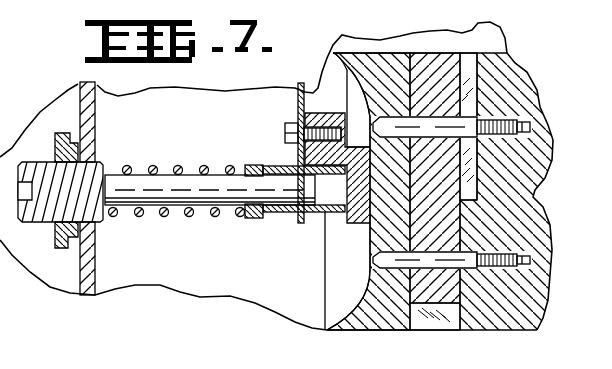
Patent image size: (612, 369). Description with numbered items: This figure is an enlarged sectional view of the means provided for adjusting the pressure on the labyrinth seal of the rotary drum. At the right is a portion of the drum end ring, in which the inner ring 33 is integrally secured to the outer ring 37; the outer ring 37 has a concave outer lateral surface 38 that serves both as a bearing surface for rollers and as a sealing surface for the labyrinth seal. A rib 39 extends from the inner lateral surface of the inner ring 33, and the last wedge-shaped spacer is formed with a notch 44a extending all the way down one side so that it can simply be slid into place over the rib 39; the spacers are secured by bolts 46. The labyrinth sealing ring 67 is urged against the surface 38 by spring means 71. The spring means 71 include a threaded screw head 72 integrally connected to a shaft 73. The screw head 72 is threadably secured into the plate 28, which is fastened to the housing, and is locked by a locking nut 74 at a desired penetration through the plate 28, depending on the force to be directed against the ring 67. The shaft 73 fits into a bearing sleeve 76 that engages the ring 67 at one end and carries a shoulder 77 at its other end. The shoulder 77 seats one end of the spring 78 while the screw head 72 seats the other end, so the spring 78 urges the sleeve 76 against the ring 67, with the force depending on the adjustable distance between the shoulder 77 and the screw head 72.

The plate 28 is at (87, 256).
The threaded screw head 72 is at (47, 162).
The locking nut 74 is at (74, 131).
The shaft 73 is at (191, 176).
The spring 78 is at (151, 166).
The spring means 71 is at (240, 226).
The bearing sleeve 76 is at (289, 167).
The shoulder 77 is at (250, 215).
The labyrinth sealing ring 67 is at (362, 224).
The concave outer lateral surface 38 is at (346, 320).
The outer ring 37 is at (388, 47).
The inner ring 33 is at (424, 60).
The notch 44a is at (468, 53).
The rib 39 is at (478, 200).
The bolt 46 is at (449, 116).